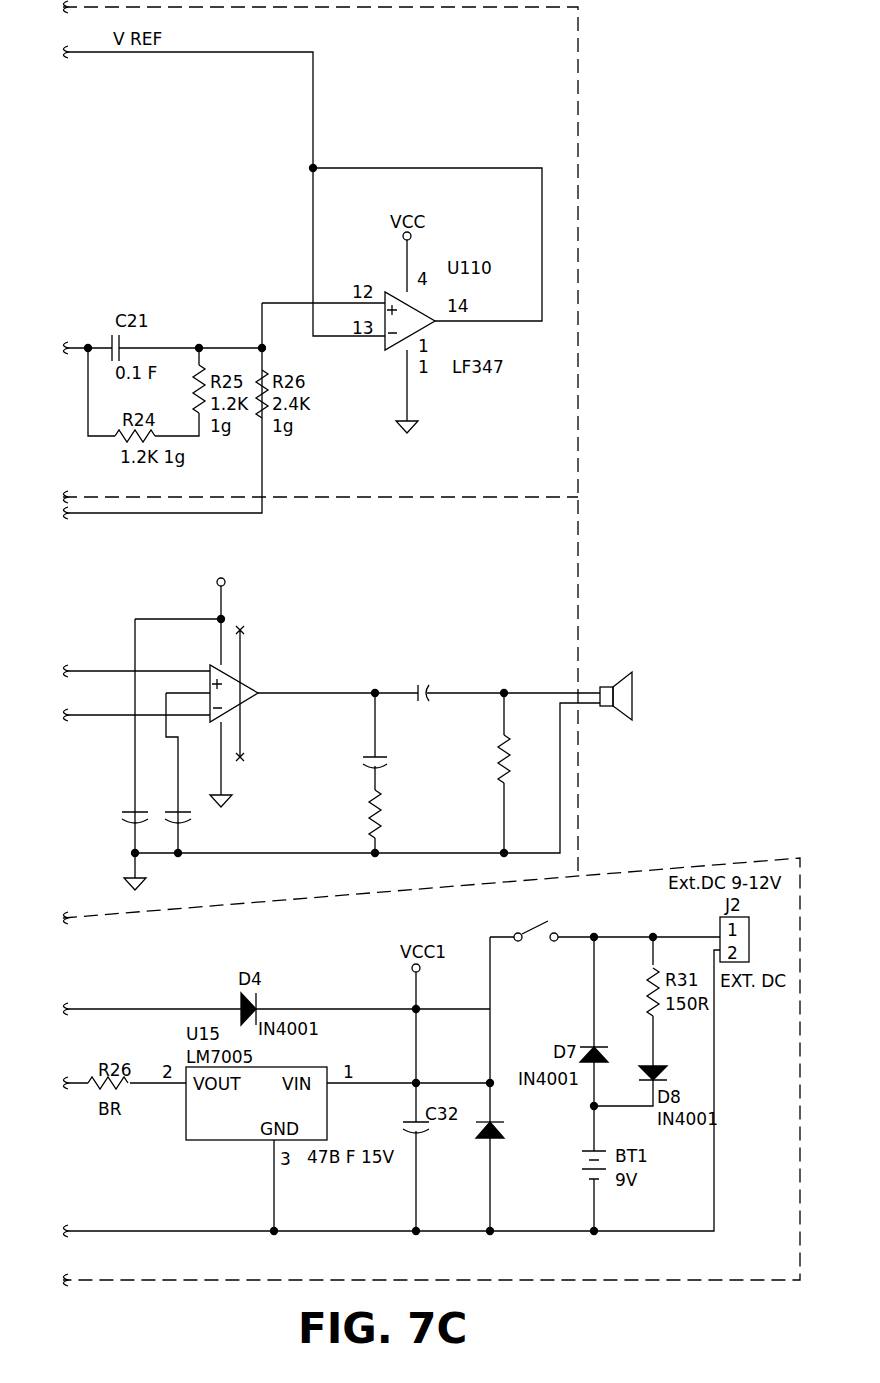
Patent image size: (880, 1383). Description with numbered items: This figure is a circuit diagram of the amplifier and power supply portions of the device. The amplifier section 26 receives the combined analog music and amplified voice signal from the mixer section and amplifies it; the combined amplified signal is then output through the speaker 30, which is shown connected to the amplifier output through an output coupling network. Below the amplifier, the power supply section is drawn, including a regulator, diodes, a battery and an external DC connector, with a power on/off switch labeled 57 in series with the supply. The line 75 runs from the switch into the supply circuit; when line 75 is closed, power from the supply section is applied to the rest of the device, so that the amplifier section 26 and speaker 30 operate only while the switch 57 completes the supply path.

The amplifier section 26 is at (476, 559).
The speaker 30 is at (632, 695).
The power on/off switch 57 is at (512, 932).
The line 75 is at (490, 1022).